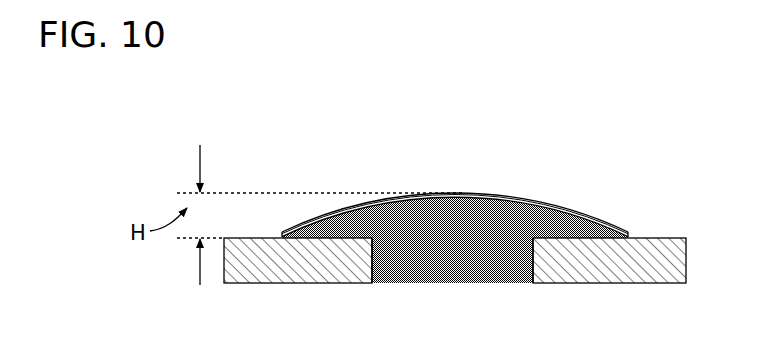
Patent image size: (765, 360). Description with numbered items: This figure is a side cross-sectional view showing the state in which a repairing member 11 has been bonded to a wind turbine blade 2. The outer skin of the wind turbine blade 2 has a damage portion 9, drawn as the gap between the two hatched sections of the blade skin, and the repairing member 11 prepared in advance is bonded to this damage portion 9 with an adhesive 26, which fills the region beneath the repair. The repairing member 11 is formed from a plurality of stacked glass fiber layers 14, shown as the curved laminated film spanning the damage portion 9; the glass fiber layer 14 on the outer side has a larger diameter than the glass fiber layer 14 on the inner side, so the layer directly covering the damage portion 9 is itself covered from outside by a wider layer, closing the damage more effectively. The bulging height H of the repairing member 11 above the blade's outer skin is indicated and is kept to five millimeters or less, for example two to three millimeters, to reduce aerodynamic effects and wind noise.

The repairing member 11 is at (375, 130).
The wind turbine blade 2 is at (653, 238).
The damage portion 9 is at (378, 257).
The glass fiber layer 14 is at (480, 193).
The adhesive 26 is at (493, 255).